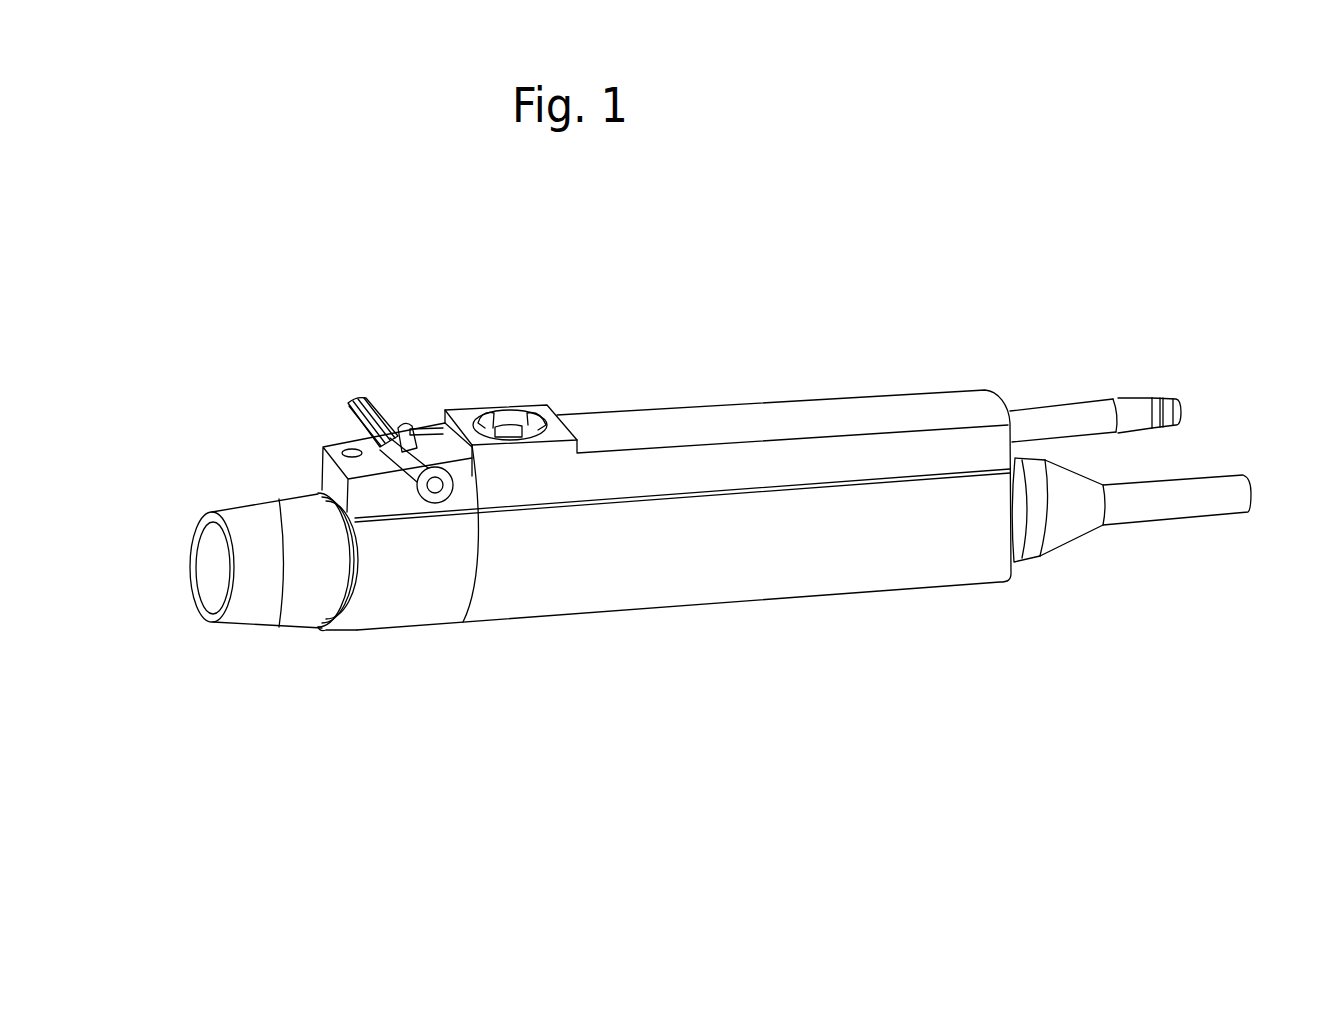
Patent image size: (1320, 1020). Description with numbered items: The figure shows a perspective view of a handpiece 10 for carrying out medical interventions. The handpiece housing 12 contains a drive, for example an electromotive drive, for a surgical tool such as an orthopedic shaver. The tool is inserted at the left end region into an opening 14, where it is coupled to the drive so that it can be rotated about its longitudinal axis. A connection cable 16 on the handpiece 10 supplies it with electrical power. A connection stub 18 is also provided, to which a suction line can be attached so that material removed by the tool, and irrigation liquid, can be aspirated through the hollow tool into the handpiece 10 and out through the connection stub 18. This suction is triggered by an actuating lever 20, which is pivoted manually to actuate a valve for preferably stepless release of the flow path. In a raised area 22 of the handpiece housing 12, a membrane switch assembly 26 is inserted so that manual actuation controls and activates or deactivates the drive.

The handpiece 10 is at (881, 302).
The handpiece housing 12 is at (883, 592).
The opening 14 is at (208, 583).
The connection cable 16 is at (1223, 470).
The connection stub 18 is at (1082, 405).
The actuating lever 20 is at (360, 398).
The raised area 22 is at (548, 403).
The membrane switch assembly 26 is at (506, 376).